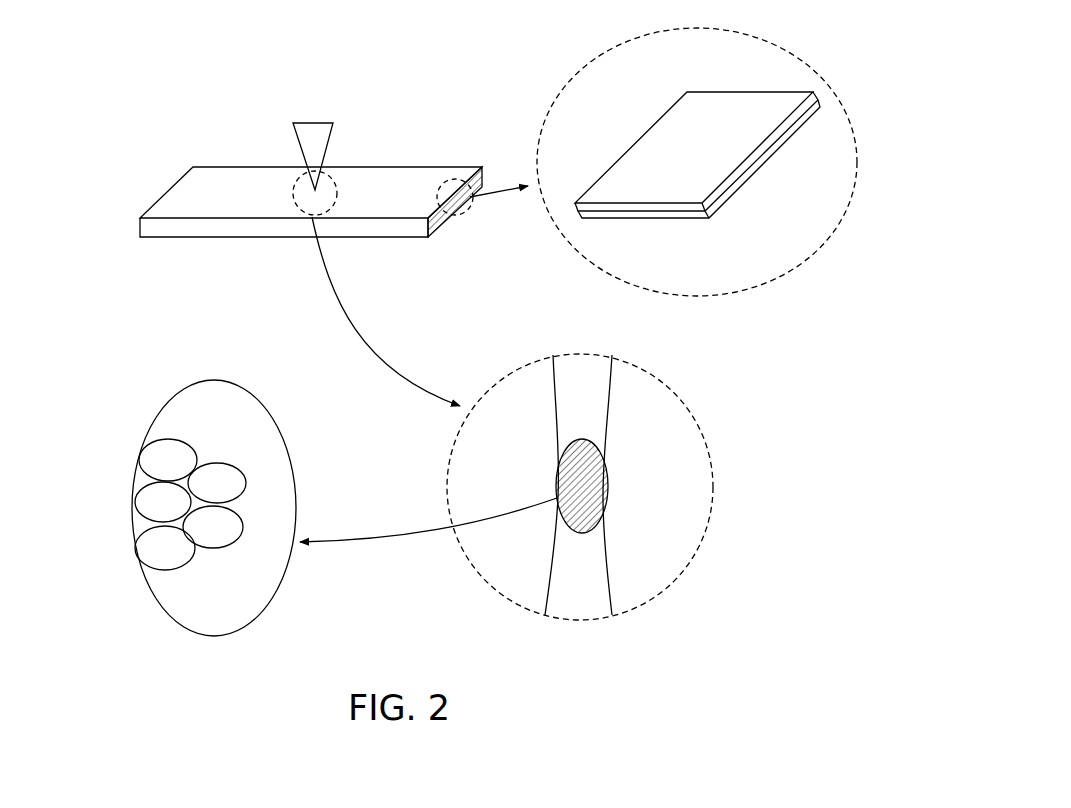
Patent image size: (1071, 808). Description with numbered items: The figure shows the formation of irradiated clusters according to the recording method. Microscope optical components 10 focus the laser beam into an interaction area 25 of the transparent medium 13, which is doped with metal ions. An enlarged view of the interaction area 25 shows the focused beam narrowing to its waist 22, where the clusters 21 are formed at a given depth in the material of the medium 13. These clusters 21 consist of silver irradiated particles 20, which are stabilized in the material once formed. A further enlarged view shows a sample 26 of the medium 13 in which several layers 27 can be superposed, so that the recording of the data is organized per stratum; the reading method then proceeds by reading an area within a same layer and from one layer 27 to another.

The microscope optical components 10 is at (320, 132).
The transparent medium 13 is at (185, 185).
The silver irradiated particles 20 is at (135, 490).
The clusters 21 is at (130, 453).
The waist 22 is at (608, 483).
The interaction area 25 is at (290, 208).
The sample 26 is at (460, 177).
The layers 27 is at (760, 160).